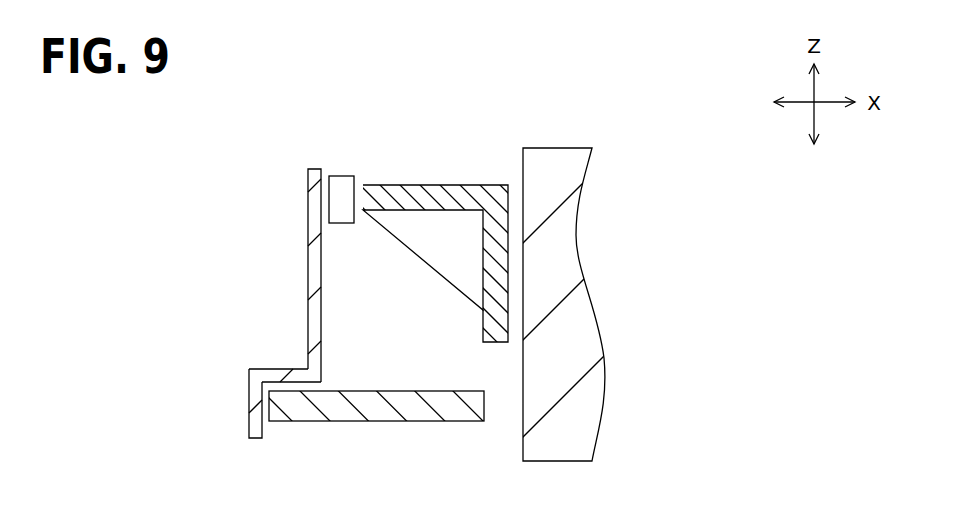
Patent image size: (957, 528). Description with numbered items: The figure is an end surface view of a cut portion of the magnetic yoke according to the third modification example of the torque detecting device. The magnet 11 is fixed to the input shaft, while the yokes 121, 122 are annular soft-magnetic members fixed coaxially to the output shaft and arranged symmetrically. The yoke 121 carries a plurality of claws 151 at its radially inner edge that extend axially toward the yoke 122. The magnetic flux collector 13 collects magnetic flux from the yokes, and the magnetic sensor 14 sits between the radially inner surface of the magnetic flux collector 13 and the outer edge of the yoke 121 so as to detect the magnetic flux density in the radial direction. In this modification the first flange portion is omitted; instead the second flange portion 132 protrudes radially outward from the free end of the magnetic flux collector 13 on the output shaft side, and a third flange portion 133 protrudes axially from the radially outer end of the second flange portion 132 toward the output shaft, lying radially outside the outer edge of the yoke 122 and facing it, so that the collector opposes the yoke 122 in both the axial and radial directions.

The magnet 11 is at (555, 155).
The magnetic flux collector 13 is at (314, 274).
The magnetic sensor 14 is at (343, 179).
The yoke 121 is at (418, 192).
The yoke 122 is at (386, 411).
The second flange portion 132 is at (270, 374).
The third flange portion 133 is at (254, 422).
The claw 151 is at (499, 334).